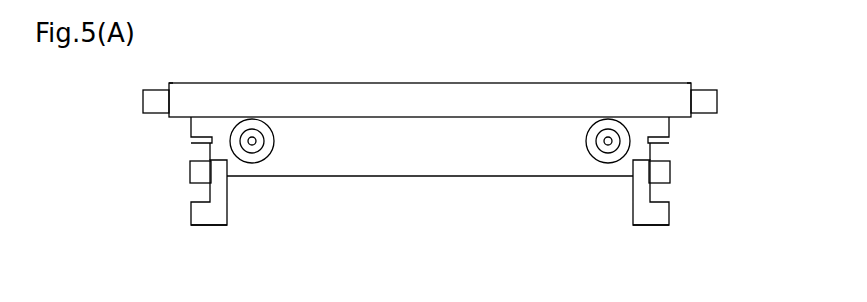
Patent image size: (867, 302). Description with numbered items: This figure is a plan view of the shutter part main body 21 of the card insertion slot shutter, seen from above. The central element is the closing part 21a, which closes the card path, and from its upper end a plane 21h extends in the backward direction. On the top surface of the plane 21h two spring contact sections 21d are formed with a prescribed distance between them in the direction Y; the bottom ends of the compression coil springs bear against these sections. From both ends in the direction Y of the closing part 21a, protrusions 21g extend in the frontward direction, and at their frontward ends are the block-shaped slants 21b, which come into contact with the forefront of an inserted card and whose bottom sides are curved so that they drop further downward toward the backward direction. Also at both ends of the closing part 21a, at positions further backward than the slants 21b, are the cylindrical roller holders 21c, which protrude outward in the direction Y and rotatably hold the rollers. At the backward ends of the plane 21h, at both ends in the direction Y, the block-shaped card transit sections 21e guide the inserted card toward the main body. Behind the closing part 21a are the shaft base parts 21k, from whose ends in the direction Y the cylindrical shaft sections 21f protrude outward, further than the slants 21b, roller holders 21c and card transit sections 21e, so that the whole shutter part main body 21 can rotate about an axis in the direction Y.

The shutter part main body 21 is at (422, 83).
The closing part 21a is at (425, 180).
The slants 21b is at (203, 227).
The roller holders 21c is at (190, 172).
The spring contact sections 21d is at (252, 122).
The card transit sections 21e is at (192, 138).
The shaft sections 21f is at (143, 98).
The protrusions 21g is at (227, 198).
The plane 21h is at (435, 159).
The shaft base parts 21k is at (173, 83).